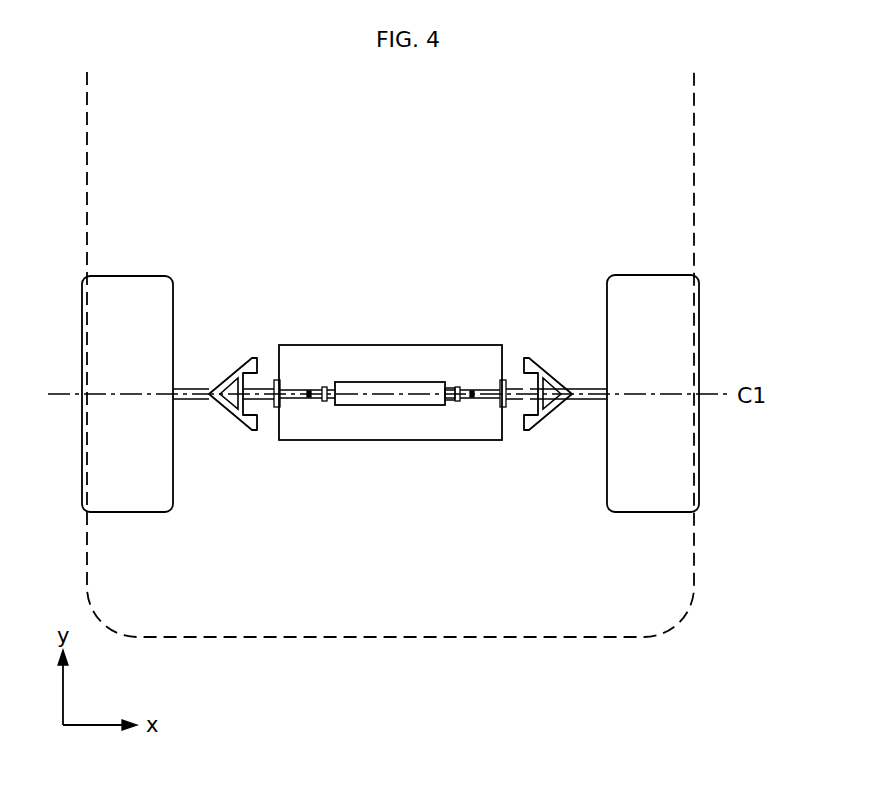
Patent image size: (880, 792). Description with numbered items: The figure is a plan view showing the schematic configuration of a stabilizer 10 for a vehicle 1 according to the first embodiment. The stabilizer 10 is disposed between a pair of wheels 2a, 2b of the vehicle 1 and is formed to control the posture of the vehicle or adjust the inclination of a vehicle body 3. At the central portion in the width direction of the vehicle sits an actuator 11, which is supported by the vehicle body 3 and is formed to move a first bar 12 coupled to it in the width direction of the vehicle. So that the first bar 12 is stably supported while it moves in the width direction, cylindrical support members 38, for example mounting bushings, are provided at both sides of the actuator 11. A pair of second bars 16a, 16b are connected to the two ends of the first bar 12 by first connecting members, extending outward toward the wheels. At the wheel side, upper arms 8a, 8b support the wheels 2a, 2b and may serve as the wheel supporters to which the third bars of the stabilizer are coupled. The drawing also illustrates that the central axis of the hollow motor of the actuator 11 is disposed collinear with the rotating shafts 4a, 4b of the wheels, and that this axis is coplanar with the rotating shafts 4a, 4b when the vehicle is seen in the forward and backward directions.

The vehicle 1 is at (593, 651).
The wheel 2a is at (127, 276).
The wheel 2b is at (651, 275).
The vehicle body 3 is at (414, 345).
The rotating shaft 4a is at (192, 388).
The rotating shaft 4b is at (590, 388).
The upper arm 8a is at (232, 370).
The upper arm 8b is at (549, 370).
The stabilizer 10 is at (390, 415).
The actuator 11 is at (413, 405).
The first bar 12 is at (461, 405).
The second bar 16a is at (302, 388).
The second bar 16b is at (487, 388).
The cylindrical support member 38 is at (322, 388).